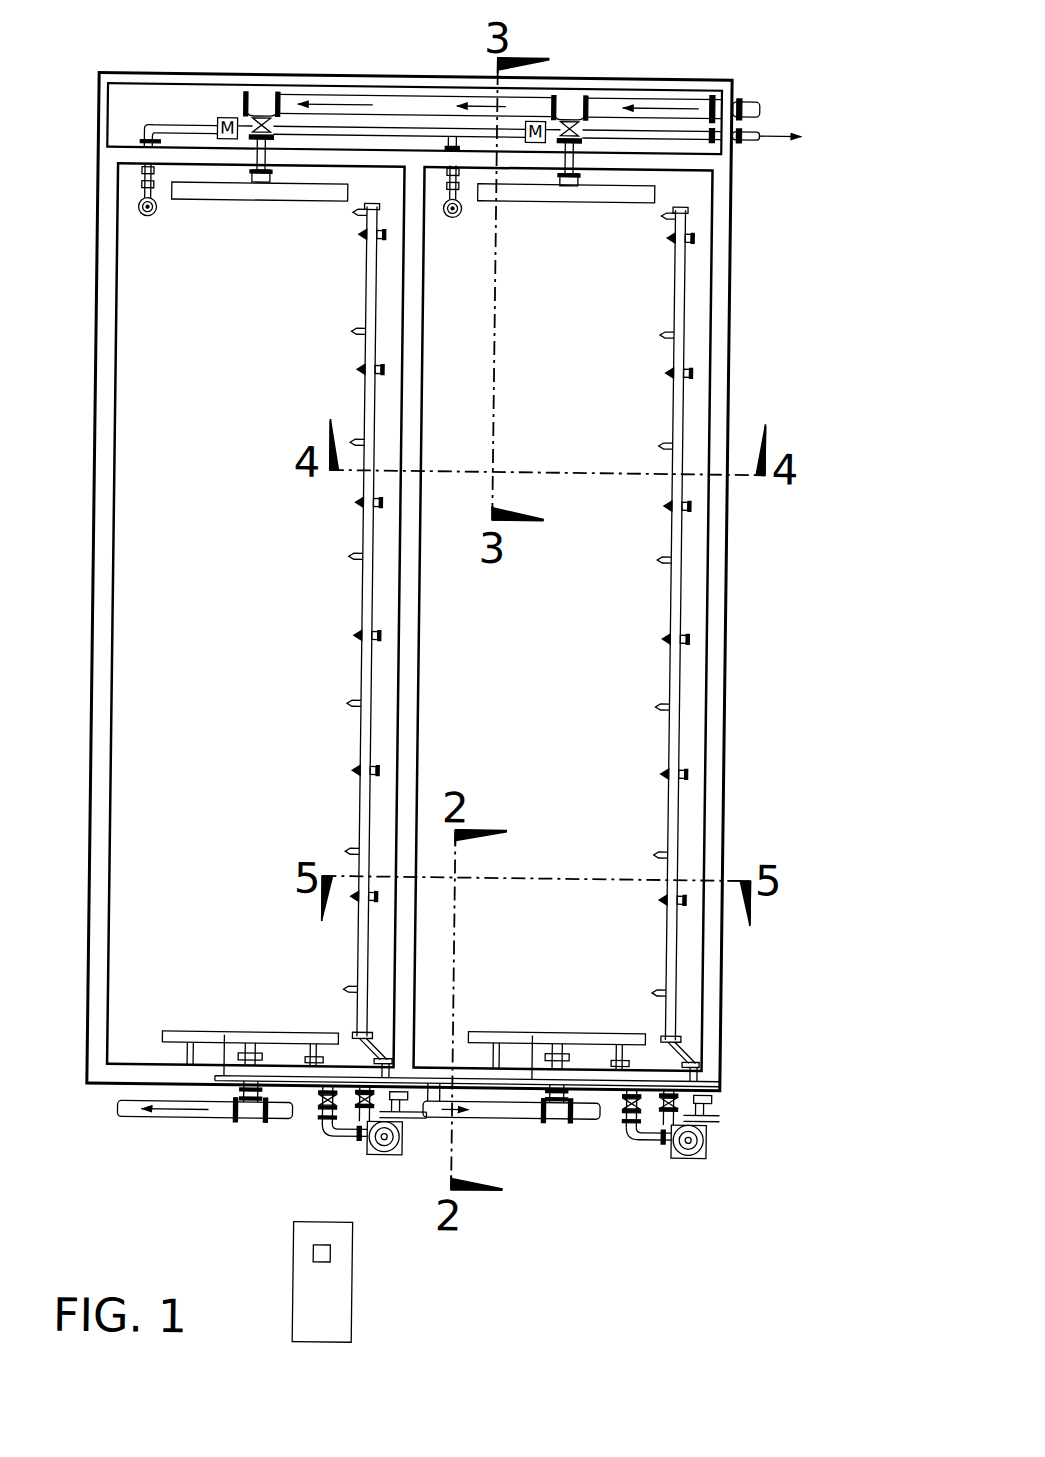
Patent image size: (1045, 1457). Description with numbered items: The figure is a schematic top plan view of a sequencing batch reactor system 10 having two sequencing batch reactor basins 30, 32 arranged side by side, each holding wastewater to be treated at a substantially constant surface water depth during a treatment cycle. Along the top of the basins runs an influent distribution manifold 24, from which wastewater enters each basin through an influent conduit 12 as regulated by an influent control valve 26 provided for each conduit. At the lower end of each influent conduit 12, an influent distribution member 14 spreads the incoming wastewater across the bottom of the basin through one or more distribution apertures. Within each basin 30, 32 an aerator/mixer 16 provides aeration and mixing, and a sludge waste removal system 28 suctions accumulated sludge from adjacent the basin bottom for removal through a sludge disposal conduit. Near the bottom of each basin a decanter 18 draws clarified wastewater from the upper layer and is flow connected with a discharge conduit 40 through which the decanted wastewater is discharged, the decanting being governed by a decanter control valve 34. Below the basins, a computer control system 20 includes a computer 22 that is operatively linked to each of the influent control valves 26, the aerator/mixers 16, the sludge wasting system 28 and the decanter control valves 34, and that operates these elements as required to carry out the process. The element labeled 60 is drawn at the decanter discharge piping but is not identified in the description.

The sequencing batch reactor system 10 is at (748, 678).
The influent conduit 12 is at (249, 200).
The influent distribution member 14 is at (306, 203).
The aerator/mixer 16 is at (359, 340).
The decanter 18 is at (284, 1034).
The computer control system 20 is at (360, 1326).
The computer 22 is at (316, 1253).
The influent distribution manifold 24 is at (661, 100).
The influent control valve 26 is at (256, 110).
The sludge waste removal system 28 is at (136, 222).
The sequencing batch reactor basin 30 is at (223, 627).
The sequencing batch reactor basin 32 is at (511, 624).
The decanter control valve 34 is at (229, 1081).
The discharge conduit 40 is at (256, 1054).
The recirculation pump 60 is at (541, 1118).